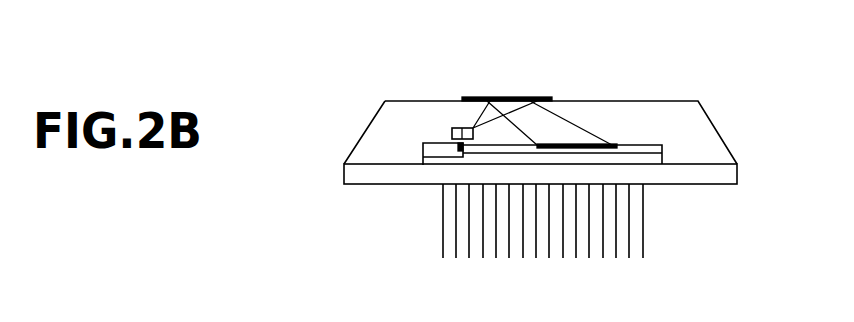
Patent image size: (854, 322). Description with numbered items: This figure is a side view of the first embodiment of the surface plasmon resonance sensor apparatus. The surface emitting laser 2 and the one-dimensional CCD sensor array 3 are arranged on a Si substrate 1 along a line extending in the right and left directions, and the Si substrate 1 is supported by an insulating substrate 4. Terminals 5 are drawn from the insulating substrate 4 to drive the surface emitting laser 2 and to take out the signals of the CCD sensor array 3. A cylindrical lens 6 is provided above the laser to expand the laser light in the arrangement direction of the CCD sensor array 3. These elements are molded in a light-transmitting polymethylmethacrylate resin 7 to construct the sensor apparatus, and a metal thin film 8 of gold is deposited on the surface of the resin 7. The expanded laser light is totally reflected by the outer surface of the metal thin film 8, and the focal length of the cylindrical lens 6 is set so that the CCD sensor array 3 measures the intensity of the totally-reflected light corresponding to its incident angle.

The Si substrate 1 is at (650, 160).
The surface emitting laser 2 is at (462, 152).
The one-dimensional CCD sensor array 3 is at (583, 144).
The insulating substrate 4 is at (735, 175).
The terminals 5 is at (630, 210).
The cylindrical lens 6 is at (452, 131).
The light-transmitting polymethylmethacrylate resin 7 is at (376, 148).
The metal thin film 8 is at (500, 97).